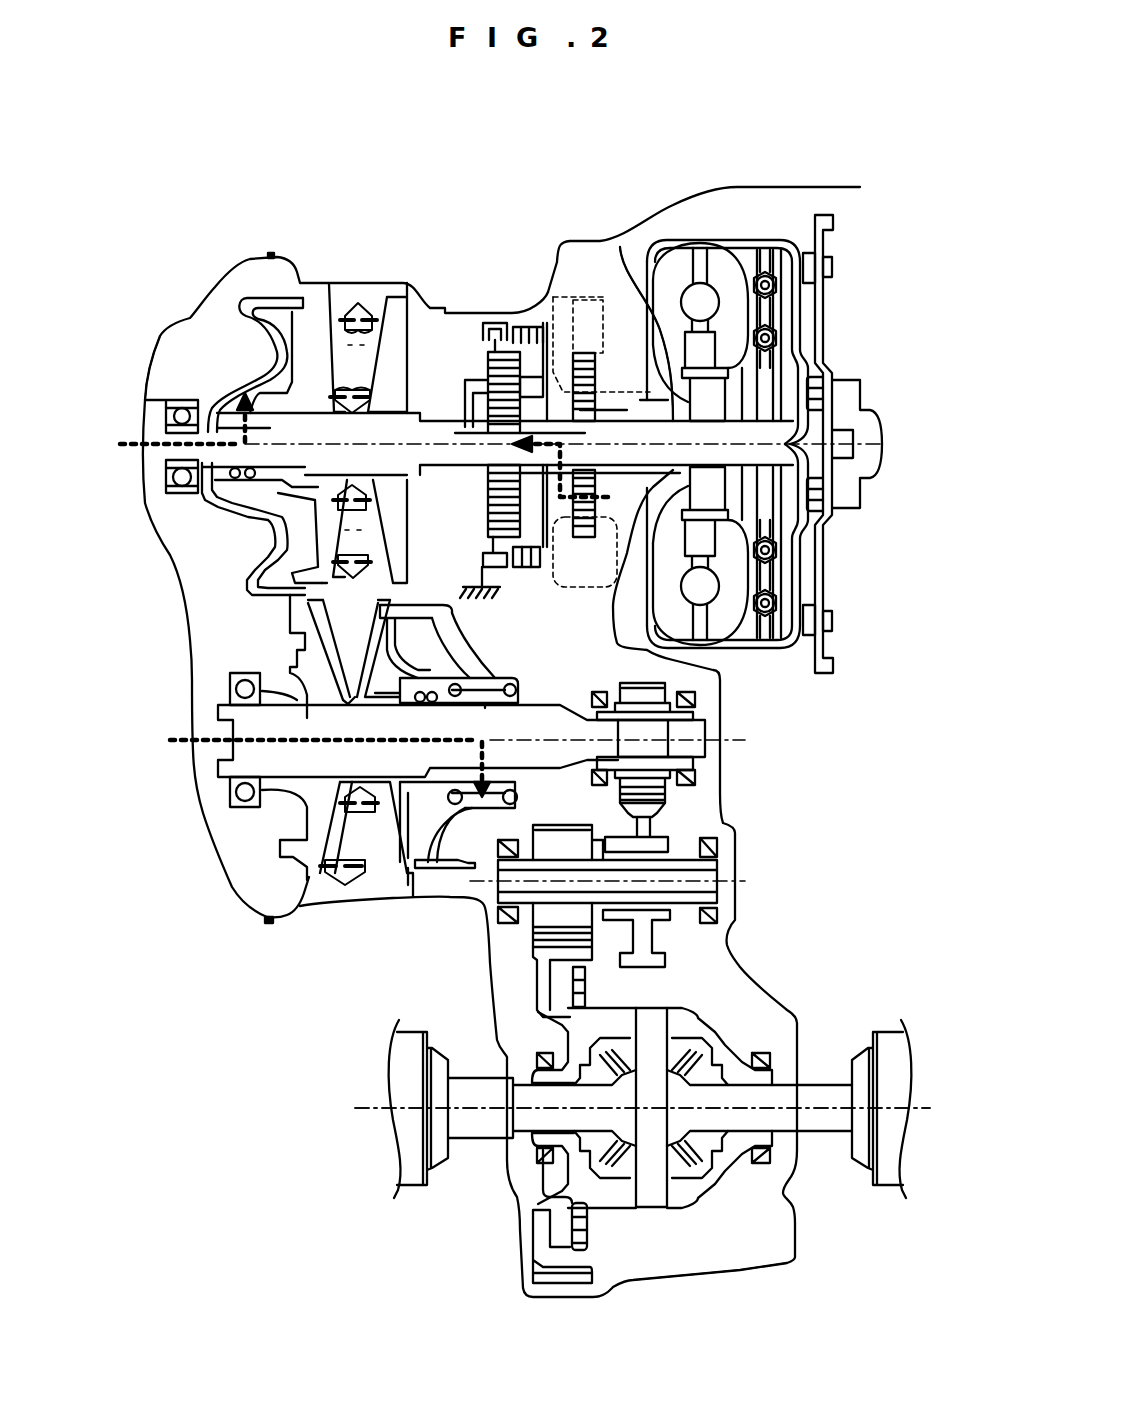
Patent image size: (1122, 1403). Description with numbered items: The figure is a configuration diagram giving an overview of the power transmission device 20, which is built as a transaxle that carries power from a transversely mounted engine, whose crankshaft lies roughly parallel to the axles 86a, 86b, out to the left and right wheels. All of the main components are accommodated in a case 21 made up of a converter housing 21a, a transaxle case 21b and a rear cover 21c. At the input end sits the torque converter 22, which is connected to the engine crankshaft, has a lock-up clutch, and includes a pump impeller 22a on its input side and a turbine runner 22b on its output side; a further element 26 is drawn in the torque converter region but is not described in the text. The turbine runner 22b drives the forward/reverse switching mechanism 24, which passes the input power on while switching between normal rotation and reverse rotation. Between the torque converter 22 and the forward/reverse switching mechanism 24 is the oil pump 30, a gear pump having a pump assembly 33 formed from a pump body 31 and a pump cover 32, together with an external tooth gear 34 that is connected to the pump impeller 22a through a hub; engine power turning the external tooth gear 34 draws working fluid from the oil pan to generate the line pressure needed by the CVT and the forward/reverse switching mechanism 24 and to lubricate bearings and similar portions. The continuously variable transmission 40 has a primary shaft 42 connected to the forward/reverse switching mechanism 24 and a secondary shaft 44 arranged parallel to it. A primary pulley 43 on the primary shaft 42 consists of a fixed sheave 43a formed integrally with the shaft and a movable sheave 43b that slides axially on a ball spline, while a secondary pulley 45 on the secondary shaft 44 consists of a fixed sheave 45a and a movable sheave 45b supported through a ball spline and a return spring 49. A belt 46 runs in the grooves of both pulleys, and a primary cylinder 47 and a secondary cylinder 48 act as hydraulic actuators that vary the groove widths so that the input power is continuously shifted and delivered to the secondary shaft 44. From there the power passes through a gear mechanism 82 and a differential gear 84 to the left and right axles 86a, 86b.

The power transmission device 20 is at (244, 1082).
The case 21 is at (187, 788).
The converter housing 21a is at (735, 1277).
The transaxle case 21b is at (513, 1243).
The rear cover 21c is at (148, 355).
The torque converter 22 is at (727, 394).
The pump impeller 22a is at (740, 285).
The turbine runner 22b is at (683, 277).
The forward/reverse switching mechanism 24 is at (471, 342).
The clutch hub 26 is at (667, 468).
The oil pump 30 is at (628, 380).
The pump body 31 is at (592, 308).
The pump cover 32 is at (612, 265).
The pump assembly 33 is at (577, 377).
The external tooth gear 34 is at (578, 525).
The continuously variable transmission 40 is at (270, 617).
The primary shaft 42 is at (358, 480).
The primary pulley 43 is at (354, 379).
The fixed sheave 43a is at (398, 330).
The movable sheave 43b is at (322, 345).
The secondary shaft 44 is at (348, 710).
The secondary pulley 45 is at (317, 803).
The fixed sheave 45a is at (300, 912).
The movable sheave 45b is at (375, 780).
The belt 46 is at (348, 300).
The primary cylinder 47 is at (253, 364).
The secondary cylinder 48 is at (457, 880).
The return spring 49 is at (478, 680).
The gear mechanism 82 is at (686, 973).
The differential gear 84 is at (733, 1187).
The left axle 86a is at (482, 1130).
The right axle 86b is at (822, 1130).